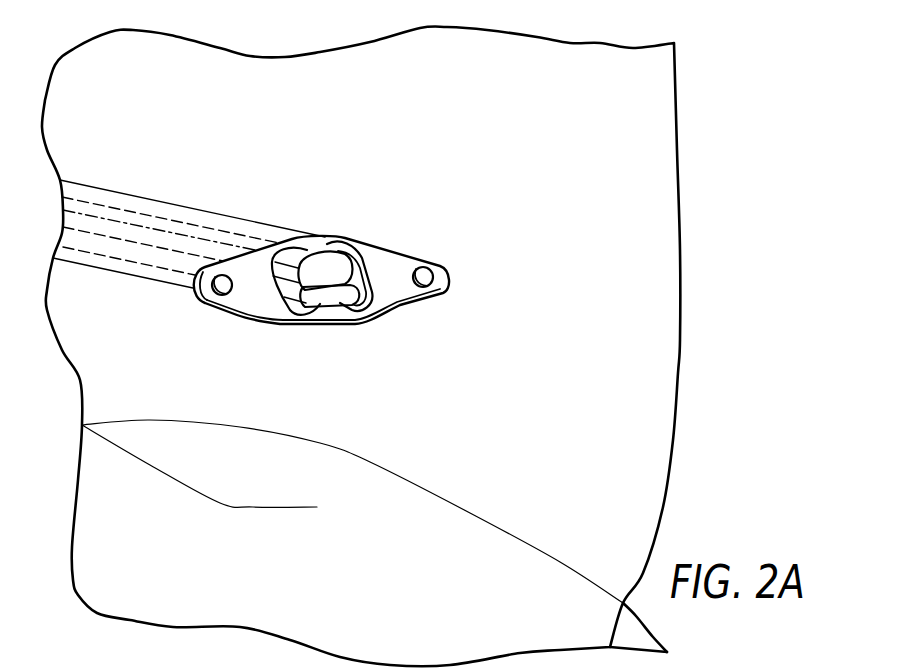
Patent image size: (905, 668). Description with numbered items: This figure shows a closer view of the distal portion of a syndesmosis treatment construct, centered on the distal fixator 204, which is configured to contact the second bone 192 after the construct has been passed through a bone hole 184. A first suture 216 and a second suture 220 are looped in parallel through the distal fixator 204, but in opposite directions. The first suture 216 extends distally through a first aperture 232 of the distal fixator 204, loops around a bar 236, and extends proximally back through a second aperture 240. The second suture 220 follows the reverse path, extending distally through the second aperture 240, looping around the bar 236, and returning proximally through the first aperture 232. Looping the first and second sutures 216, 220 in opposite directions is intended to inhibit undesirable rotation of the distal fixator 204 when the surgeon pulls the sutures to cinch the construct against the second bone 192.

The second bone 192 is at (307, 105).
The bone hole 184 is at (110, 188).
The first suture 216 is at (170, 221).
The second suture 220 is at (123, 257).
The distal fixator 204 is at (363, 239).
The first aperture 232 is at (293, 303).
The bar 236 is at (337, 307).
The second aperture 240 is at (372, 302).